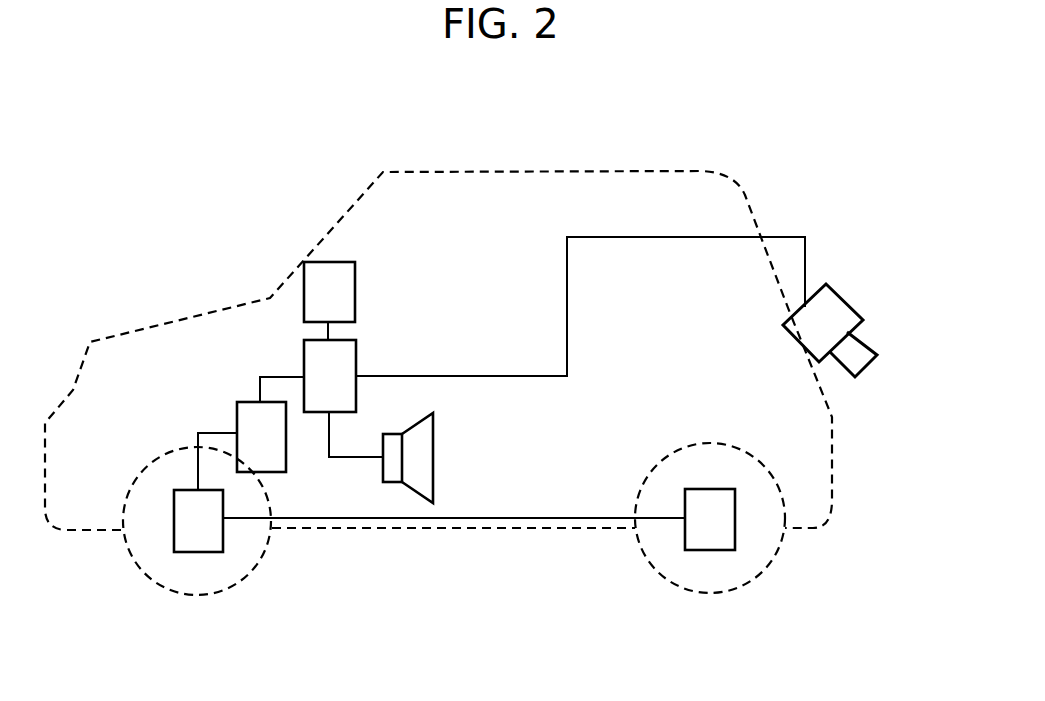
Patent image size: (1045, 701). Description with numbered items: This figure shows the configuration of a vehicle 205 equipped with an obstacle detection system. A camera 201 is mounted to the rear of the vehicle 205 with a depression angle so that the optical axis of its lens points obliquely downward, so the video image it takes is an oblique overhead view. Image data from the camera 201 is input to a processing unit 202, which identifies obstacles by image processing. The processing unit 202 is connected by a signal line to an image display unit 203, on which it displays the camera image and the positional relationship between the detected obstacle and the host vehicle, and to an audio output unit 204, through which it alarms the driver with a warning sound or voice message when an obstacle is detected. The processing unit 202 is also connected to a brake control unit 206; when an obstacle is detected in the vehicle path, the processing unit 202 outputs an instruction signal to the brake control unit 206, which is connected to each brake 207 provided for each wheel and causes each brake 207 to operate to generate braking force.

The camera 201 is at (845, 297).
The processing unit 202 is at (304, 350).
The image display unit 203 is at (302, 293).
The audio output unit 204 is at (433, 477).
The vehicle 205 is at (683, 171).
The brake control unit 206 is at (237, 410).
The brake 207 is at (183, 553).